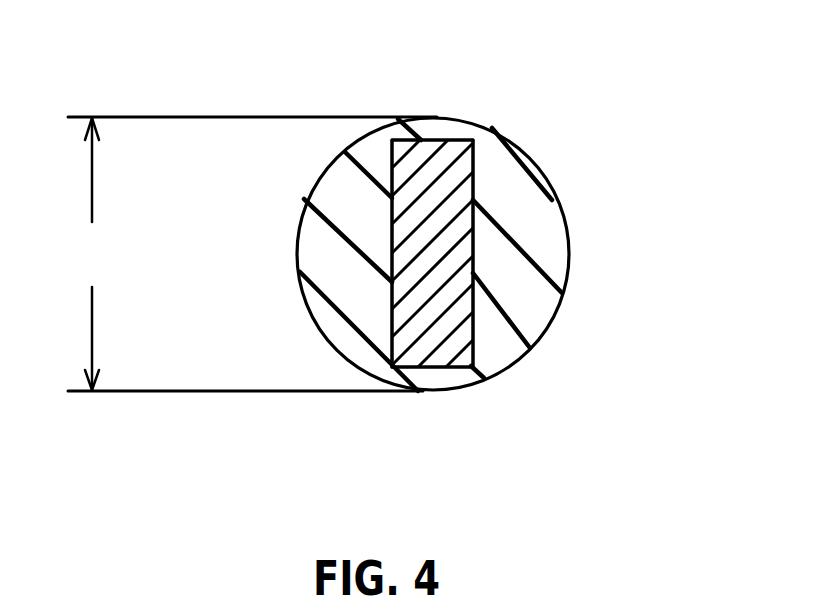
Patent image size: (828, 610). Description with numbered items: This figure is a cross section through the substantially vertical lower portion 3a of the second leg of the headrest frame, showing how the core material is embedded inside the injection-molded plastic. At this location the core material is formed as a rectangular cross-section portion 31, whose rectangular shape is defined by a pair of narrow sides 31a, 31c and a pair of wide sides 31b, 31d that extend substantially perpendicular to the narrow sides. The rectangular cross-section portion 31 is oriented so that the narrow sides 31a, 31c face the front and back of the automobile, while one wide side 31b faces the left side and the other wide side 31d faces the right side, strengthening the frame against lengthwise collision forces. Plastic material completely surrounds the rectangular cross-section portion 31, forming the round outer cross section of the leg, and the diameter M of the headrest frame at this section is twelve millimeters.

The substantially vertical lower portion of the second leg 3a is at (513, 360).
The rectangular cross-section portion 31 is at (455, 177).
The narrow side 31a is at (435, 368).
The wide side 31b is at (468, 262).
The narrow side 31c is at (428, 130).
The wide side 31d is at (390, 237).
The diameter of the headrest frame M is at (91, 254).